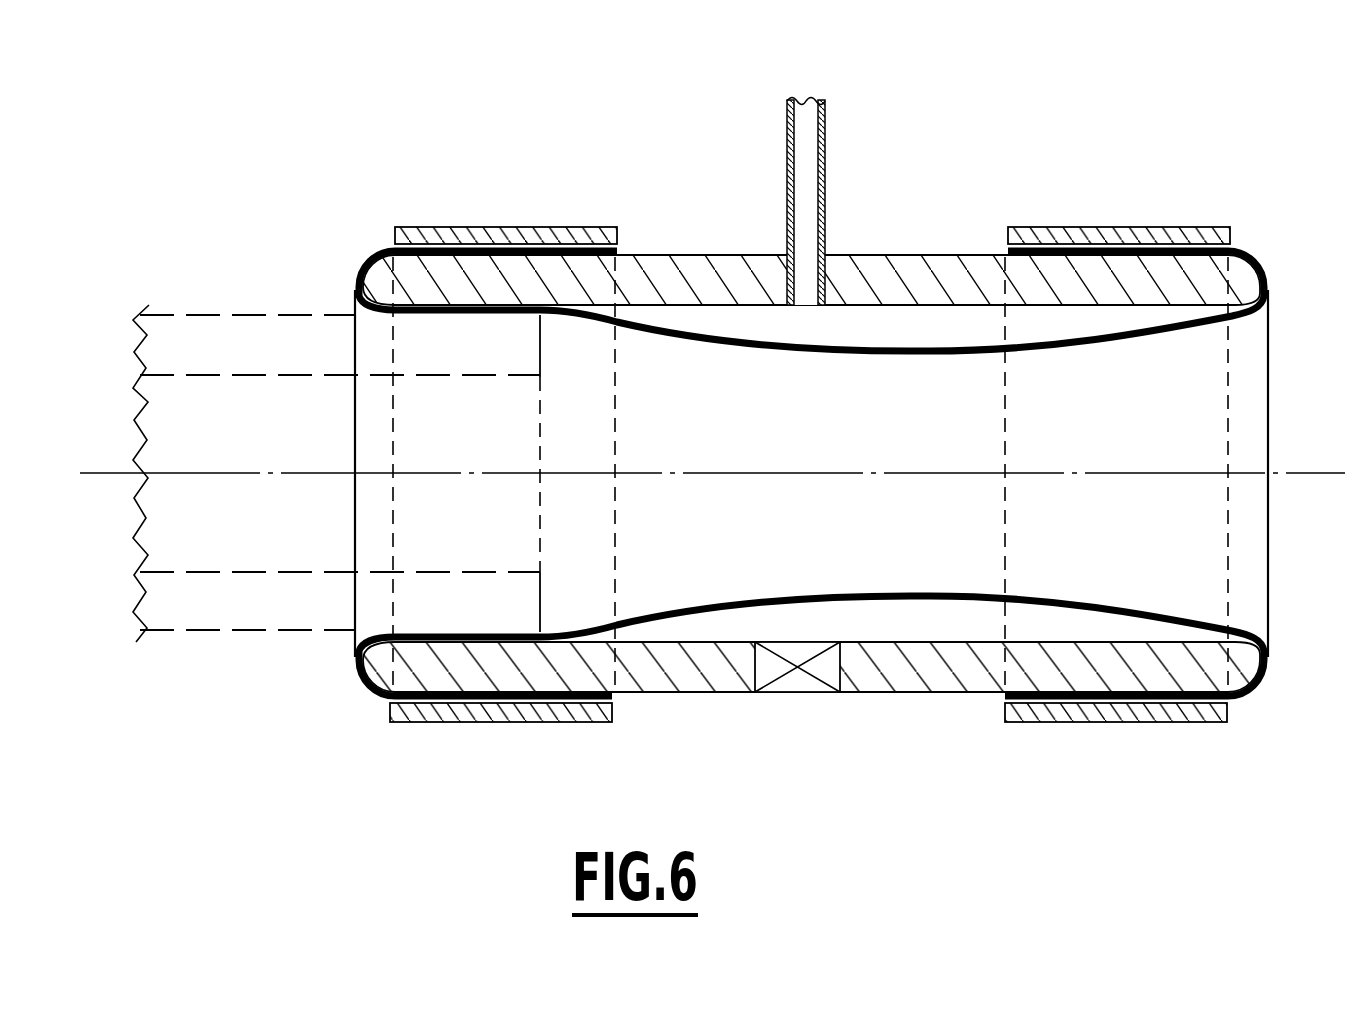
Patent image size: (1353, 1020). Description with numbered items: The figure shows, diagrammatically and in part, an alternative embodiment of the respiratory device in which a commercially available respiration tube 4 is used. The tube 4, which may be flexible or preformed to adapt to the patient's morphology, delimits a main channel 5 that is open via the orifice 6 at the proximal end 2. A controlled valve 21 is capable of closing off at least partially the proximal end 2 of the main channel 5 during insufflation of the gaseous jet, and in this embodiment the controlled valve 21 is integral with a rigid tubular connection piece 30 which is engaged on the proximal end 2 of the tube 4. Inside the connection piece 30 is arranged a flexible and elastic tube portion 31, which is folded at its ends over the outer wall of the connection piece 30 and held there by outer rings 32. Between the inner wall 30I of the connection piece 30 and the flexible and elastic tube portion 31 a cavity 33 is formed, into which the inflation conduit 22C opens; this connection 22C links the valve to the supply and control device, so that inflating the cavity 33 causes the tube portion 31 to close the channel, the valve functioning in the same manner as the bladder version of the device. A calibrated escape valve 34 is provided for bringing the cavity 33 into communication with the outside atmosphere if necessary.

The proximal end 2 is at (258, 637).
The tube 4 is at (270, 342).
The main channel 5 is at (310, 407).
The orifice 6 is at (540, 528).
The controlled valve 21 is at (1010, 142).
The connection 22C is at (807, 25).
The rigid tubular connection piece 30 is at (722, 270).
The inner wall 30I is at (932, 306).
The flexible and elastic tube portion 31 is at (930, 357).
The outer rings 32 is at (533, 230).
The cavity 33 is at (900, 622).
The calibrated escape valve 34 is at (797, 685).